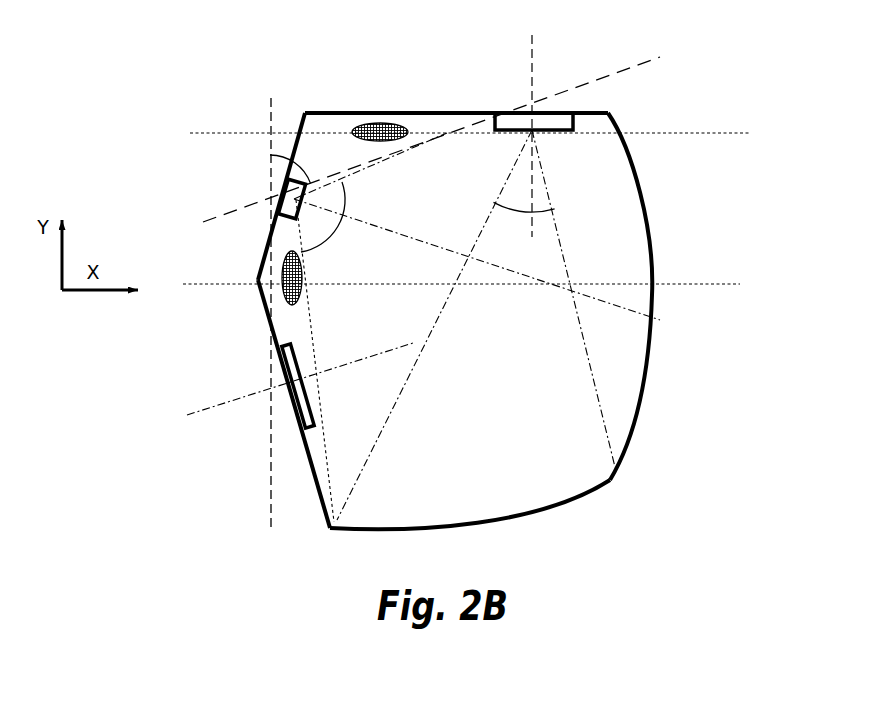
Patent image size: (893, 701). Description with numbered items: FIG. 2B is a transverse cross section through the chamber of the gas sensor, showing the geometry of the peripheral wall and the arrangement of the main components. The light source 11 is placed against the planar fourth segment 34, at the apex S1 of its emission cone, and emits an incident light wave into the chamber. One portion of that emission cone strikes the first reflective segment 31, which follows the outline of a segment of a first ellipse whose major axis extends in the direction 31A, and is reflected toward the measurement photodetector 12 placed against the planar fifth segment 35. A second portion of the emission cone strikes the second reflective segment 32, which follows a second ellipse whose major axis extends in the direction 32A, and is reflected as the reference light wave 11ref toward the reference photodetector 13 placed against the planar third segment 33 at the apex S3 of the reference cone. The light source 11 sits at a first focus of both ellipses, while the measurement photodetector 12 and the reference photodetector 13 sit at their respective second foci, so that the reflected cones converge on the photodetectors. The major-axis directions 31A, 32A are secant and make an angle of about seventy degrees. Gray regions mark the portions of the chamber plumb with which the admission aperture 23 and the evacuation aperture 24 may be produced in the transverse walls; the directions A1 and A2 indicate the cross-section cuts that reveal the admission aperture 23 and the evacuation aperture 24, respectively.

The light source 11 is at (274, 194).
The measurement photodetector 12 is at (316, 401).
The reference photodetector 13 is at (542, 140).
The admission aperture 23 is at (276, 293).
The evacuation aperture 24 is at (395, 123).
The first reflective segment 31 is at (662, 296).
The major axis direction of the first ellipse 31A is at (262, 333).
The second reflective segment 32 is at (527, 518).
The major axis direction of the second ellipse 32A is at (454, 132).
The third segment 33 is at (343, 108).
The fourth segment 34 is at (292, 129).
The fifth segment 35 is at (300, 458).
The apex of the emission cone S1 is at (284, 207).
The apex of the reference cone S3 is at (532, 104).
The direction A1 is at (474, 287).
The direction A2 is at (485, 135).
The reference light wave 11ref is at (478, 326).